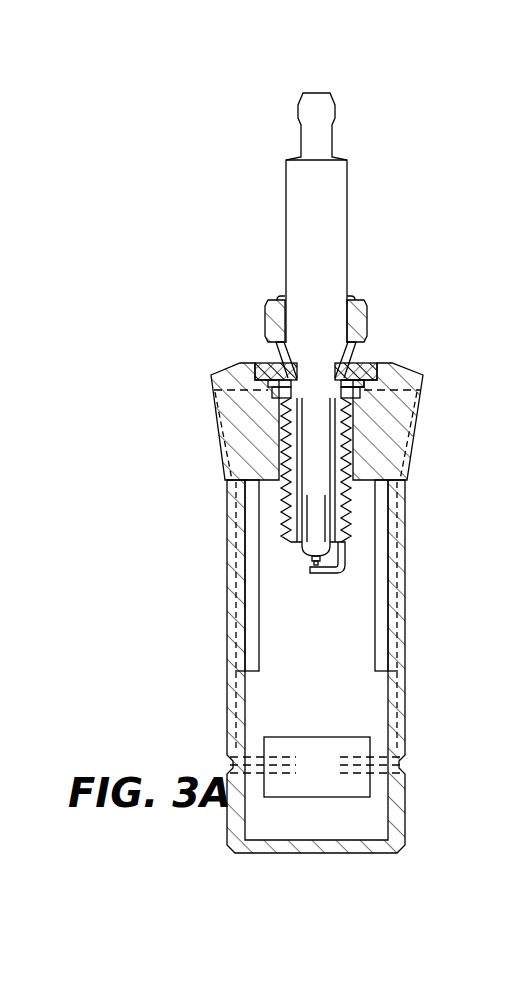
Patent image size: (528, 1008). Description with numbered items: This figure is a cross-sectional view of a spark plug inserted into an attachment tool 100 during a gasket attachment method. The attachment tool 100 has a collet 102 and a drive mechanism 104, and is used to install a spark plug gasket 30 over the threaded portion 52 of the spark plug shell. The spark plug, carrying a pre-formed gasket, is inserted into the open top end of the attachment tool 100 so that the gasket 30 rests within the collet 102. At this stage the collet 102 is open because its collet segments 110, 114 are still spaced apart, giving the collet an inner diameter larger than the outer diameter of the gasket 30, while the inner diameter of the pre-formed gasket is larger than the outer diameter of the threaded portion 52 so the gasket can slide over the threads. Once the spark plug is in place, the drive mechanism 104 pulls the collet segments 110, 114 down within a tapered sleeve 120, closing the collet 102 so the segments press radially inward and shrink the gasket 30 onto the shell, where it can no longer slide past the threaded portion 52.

The attachment tool 100 is at (152, 368).
The collet 102 is at (394, 351).
The spark plug gasket 30 is at (364, 385).
The collet segment 110 is at (390, 420).
The collet segment 114 is at (255, 378).
The tapered sleeve 120 is at (405, 468).
The threaded portion 52 is at (345, 498).
The drive mechanism 104 is at (336, 779).